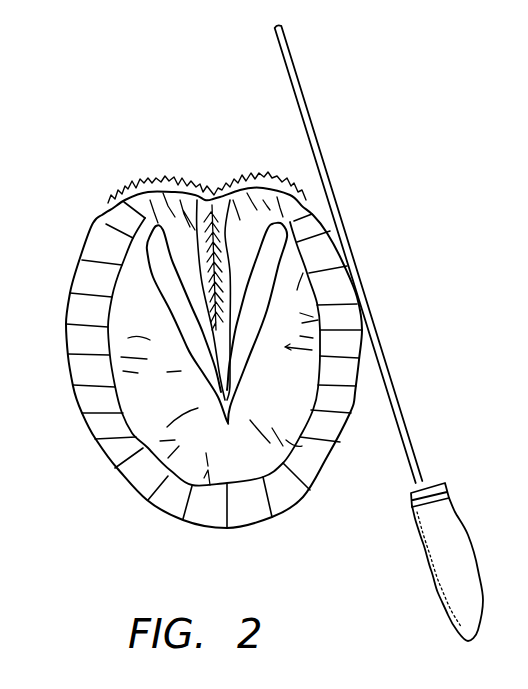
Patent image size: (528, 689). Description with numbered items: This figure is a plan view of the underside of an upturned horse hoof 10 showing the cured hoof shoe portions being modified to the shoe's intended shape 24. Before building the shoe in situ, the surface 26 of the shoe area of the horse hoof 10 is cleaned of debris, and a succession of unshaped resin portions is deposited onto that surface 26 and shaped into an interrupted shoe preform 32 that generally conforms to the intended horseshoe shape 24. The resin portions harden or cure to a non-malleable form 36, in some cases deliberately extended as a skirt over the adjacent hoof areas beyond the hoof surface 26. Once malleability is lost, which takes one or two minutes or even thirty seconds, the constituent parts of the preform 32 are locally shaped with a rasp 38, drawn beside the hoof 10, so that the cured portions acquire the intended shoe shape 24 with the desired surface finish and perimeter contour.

The horse hoof 10 is at (220, 243).
The intended shape 24 is at (318, 487).
The surface 26 is at (95, 452).
The interrupted shoe preform 32 is at (70, 272).
The non-malleable form 36 is at (327, 257).
The rasp 38 is at (402, 403).